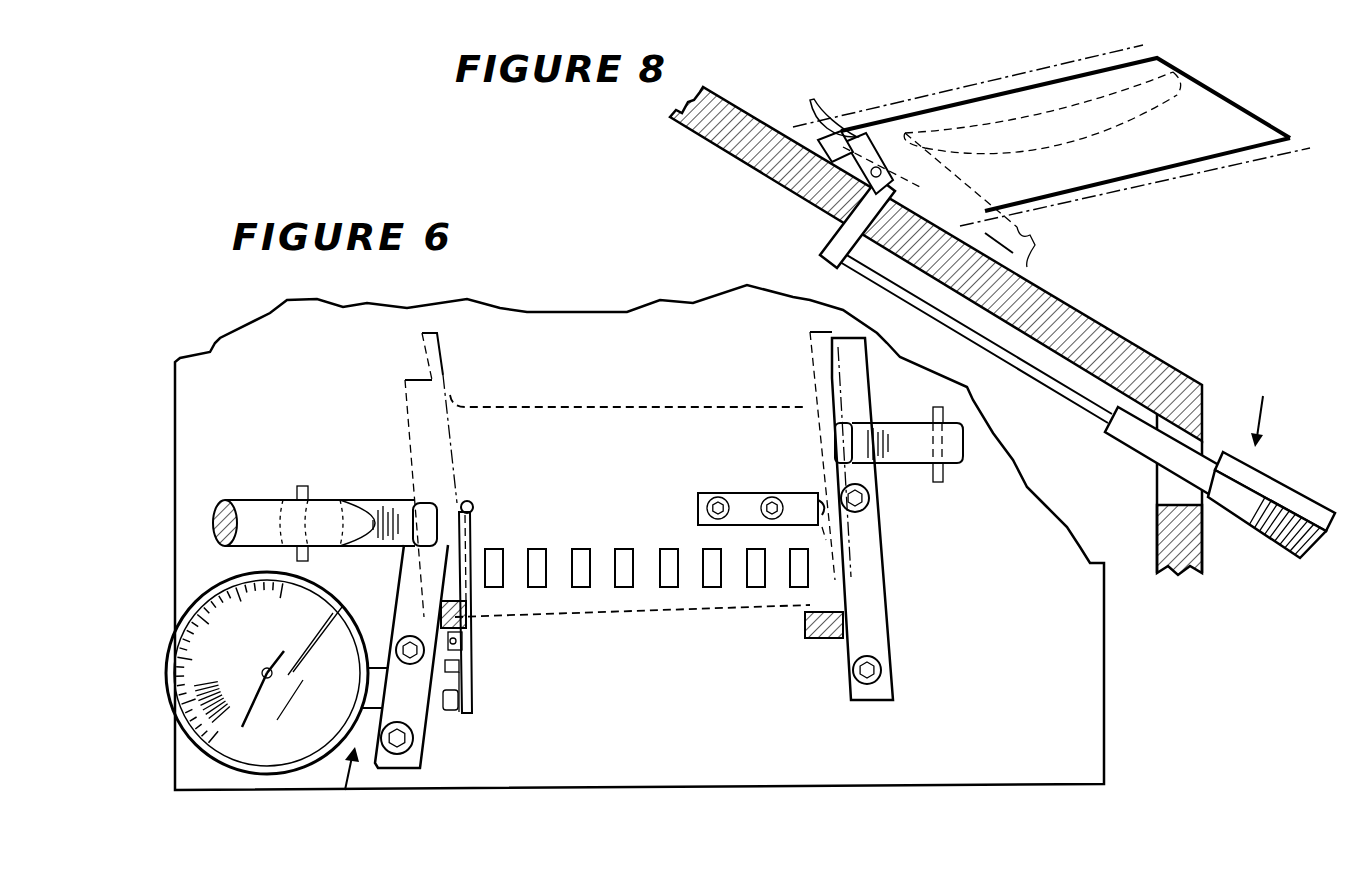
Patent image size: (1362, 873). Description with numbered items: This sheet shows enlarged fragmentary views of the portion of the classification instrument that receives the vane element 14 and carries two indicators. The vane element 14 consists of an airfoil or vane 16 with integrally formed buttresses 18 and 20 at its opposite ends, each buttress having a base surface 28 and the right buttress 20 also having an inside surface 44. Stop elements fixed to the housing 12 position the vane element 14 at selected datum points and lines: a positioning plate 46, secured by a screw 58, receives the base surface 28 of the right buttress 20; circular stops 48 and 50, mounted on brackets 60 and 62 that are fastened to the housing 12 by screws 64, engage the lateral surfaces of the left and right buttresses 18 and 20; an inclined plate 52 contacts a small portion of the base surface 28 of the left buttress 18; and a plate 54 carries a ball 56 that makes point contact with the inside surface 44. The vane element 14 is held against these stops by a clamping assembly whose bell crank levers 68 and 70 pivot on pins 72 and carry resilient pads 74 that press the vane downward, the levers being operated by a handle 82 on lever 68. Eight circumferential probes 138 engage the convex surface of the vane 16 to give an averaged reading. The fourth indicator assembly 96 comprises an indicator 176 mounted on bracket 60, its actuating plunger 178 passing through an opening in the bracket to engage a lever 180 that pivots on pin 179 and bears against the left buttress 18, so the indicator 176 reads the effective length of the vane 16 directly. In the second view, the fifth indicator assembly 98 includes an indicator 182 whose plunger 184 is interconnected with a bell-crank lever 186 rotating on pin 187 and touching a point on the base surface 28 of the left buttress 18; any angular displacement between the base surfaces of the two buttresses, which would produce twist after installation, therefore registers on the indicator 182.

In FIG. 6, the housing 12 is at (1012, 741).
In FIG. 8, the housing 12 is at (1143, 353).
In FIG. 6, the vane element 14 is at (673, 398).
In FIG. 6, the vane 16 is at (582, 415).
In FIG. 8, the vane 16 is at (960, 75).
In FIG. 6, the left buttress 18 is at (450, 360).
In FIG. 8, the left buttress 18 is at (1218, 140).
In FIG. 6, the right buttress 20 is at (795, 362).
In FIG. 8, the right buttress 20 is at (1322, 127).
In FIG. 8, the base surface 28 is at (820, 118).
In FIG. 6, the inside surface 44 is at (822, 527).
In FIG. 6, the positioning plate 46 is at (860, 375).
In FIG. 8, the positioning plate 46 is at (1040, 233).
In FIG. 6, the circular stop 48 is at (467, 608).
In FIG. 6, the circular stop 50 is at (806, 627).
In FIG. 6, the plate 52 is at (443, 512).
In FIG. 8, the plate 52 is at (1015, 254).
In FIG. 6, the plate 54 is at (740, 502).
In FIG. 6, the ball 56 is at (815, 500).
In FIG. 6, the screw 58 is at (869, 498).
In FIG. 6, the bracket 60 is at (408, 588).
In FIG. 6, the bracket 62 is at (875, 557).
In FIG. 6, the screws 64 is at (410, 664).
In FIG. 6, the bell crank lever 68 is at (377, 512).
In FIG. 6, the bell crank lever 70 is at (947, 435).
In FIG. 6, the pins 72 is at (298, 488).
In FIG. 6, the pad 74 is at (432, 503).
In FIG. 6, the handle 82 is at (243, 506).
In FIG. 6, the fourth indicator assembly 96 is at (340, 790).
In FIG. 8, the fifth indicator assembly 98 is at (1265, 404).
In FIG. 6, the circumferential probes 138 is at (596, 567).
In FIG. 6, the indicator 176 is at (258, 768).
In FIG. 6, the actuating plunger 178 is at (450, 703).
In FIG. 6, the pin 179 is at (456, 643).
In FIG. 6, the lever 180 is at (468, 684).
In FIG. 8, the indicator 182 is at (1272, 490).
In FIG. 8, the plunger 184 is at (918, 299).
In FIG. 8, the bell-crank lever 186 is at (830, 230).
In FIG. 8, the pin 187 is at (877, 165).